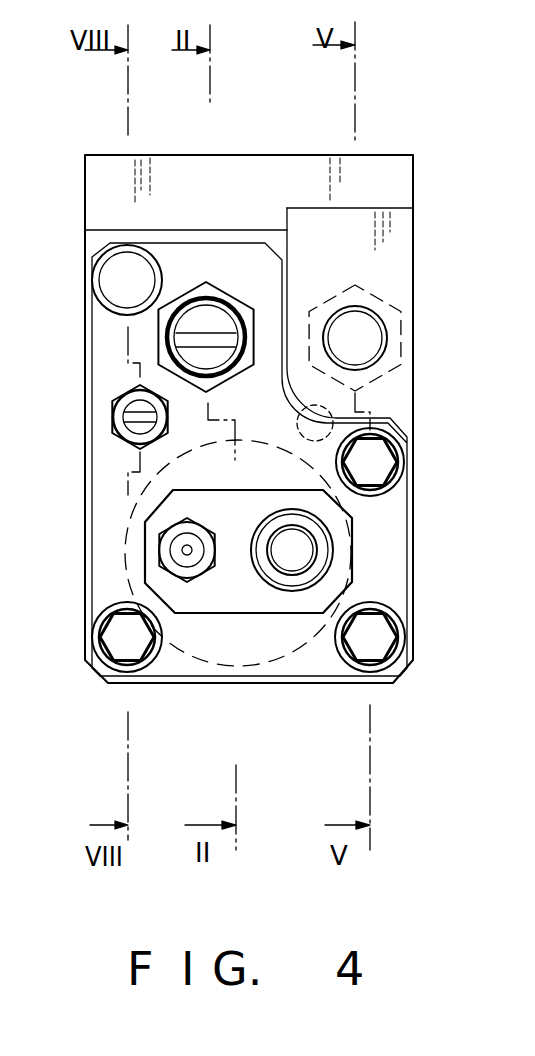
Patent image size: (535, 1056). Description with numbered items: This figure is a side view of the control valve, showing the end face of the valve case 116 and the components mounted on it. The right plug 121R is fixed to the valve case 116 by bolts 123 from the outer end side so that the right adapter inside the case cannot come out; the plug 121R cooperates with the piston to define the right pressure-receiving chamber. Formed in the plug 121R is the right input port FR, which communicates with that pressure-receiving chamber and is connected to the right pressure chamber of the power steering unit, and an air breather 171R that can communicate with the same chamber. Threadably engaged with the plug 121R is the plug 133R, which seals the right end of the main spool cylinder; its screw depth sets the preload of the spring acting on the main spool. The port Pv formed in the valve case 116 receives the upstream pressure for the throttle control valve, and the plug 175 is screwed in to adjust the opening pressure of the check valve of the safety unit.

The valve case 116 is at (397, 170).
The right plug 121R is at (390, 573).
The bolts 123 is at (112, 278).
The right plug 133R is at (225, 320).
The plug 175 is at (126, 407).
The port Pv is at (367, 335).
The right air breather 171R is at (187, 565).
The right input port FR is at (290, 565).